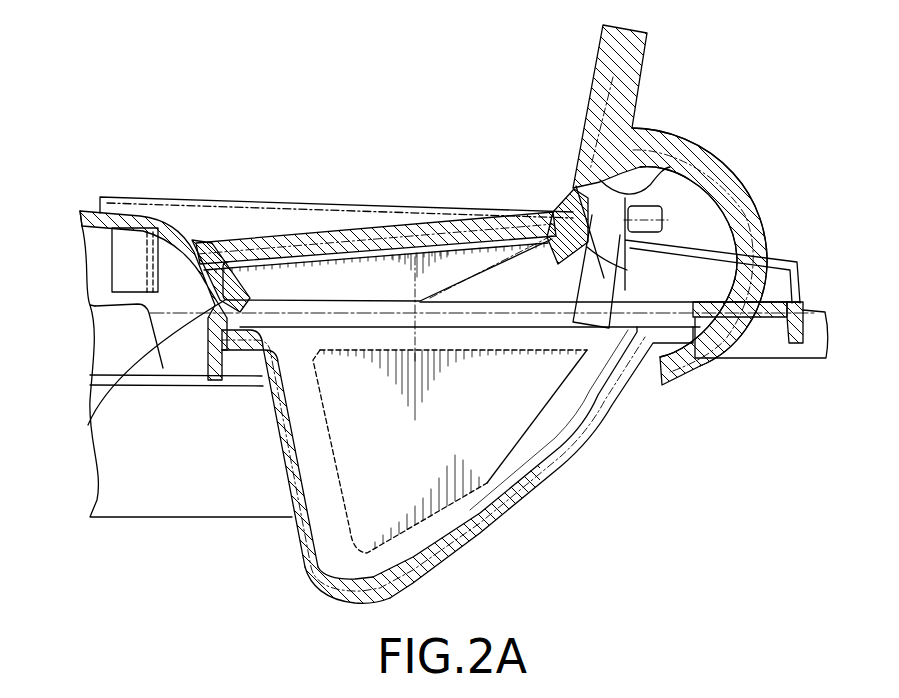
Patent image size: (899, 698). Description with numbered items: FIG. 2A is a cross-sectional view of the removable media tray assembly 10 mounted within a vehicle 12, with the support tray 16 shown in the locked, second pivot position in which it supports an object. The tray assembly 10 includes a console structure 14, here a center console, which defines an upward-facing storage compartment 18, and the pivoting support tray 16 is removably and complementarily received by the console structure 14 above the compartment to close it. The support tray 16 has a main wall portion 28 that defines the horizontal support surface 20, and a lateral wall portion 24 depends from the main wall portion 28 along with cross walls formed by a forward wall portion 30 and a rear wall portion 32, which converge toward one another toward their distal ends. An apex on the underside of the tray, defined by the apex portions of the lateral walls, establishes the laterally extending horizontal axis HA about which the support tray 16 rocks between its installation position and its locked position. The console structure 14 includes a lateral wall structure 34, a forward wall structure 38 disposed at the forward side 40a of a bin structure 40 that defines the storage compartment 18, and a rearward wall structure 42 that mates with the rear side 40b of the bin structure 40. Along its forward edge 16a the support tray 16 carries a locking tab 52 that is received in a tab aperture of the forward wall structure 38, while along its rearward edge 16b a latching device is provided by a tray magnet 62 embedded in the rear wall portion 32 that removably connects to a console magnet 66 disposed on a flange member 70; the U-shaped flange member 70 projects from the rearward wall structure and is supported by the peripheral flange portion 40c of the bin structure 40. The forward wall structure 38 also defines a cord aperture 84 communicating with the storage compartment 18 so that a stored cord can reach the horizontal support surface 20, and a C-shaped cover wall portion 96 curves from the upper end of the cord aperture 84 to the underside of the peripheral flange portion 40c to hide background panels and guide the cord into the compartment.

The tray assembly 10 is at (622, 464).
The vehicle 12 is at (127, 503).
The console structure 14 is at (254, 368).
The support tray 16 is at (420, 220).
The forward edge 16a is at (562, 222).
The rearward edge 16b is at (193, 266).
The storage compartment 18 is at (468, 442).
The horizontal support surface 20 is at (296, 236).
The lateral wall portion 24 is at (498, 261).
The main wall portion 28 is at (334, 232).
The forward wall portion 30 is at (627, 270).
The rear wall portion 32 is at (100, 312).
The lateral wall structure 34 is at (182, 210).
The forward wall structure 38 is at (624, 97).
The bin structure 40 is at (473, 540).
The forward side 40a is at (600, 402).
The rear side 40b is at (292, 480).
The peripheral flange portion 40c is at (228, 378).
The rearward wall structure 42 is at (132, 216).
The locking tab 52 is at (667, 213).
The tray magnet 62 is at (217, 303).
The magnet 66 is at (228, 305).
The flange member 70 is at (192, 372).
The cord aperture 84 is at (627, 172).
The cover wall portion 96 is at (707, 183).
The horizontal axis HA is at (427, 323).